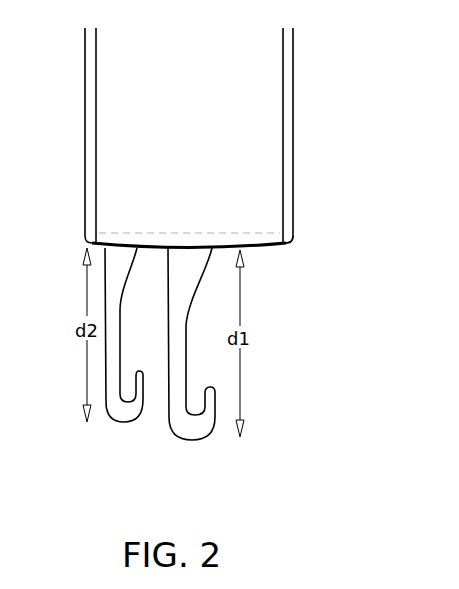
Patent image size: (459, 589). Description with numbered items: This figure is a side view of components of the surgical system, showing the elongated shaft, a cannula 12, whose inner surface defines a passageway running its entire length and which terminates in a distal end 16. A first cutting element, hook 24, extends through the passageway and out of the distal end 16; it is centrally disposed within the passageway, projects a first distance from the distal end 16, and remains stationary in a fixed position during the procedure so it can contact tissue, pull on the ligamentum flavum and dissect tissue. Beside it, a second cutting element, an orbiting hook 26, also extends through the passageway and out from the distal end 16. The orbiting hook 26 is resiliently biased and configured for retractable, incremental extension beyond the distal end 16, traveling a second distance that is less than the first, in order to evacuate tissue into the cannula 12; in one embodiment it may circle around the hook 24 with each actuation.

The cannula 12 is at (263, 62).
The distal end 16 is at (293, 210).
The hook 24 is at (188, 434).
The orbiting hook 26 is at (115, 419).